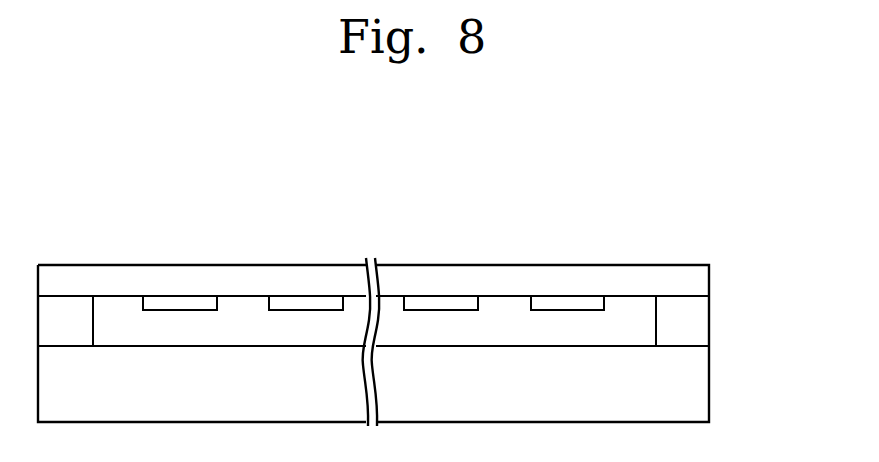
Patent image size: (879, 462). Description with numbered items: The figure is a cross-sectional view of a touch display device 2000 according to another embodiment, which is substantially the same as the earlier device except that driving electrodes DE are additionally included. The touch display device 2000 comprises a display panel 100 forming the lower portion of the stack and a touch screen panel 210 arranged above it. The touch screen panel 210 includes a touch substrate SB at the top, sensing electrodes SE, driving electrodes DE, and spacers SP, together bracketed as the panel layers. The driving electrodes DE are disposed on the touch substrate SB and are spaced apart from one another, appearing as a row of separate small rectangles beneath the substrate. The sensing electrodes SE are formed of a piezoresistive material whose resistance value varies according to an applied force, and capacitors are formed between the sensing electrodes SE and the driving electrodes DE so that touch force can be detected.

The touch display device 2000 is at (748, 189).
The touch screen panel 210 is at (775, 268).
The touch substrate SB is at (699, 280).
The sensing electrodes SE is at (595, 302).
The spacers SP is at (700, 324).
The driving electrodes DE is at (468, 302).
The display panel 100 is at (700, 382).